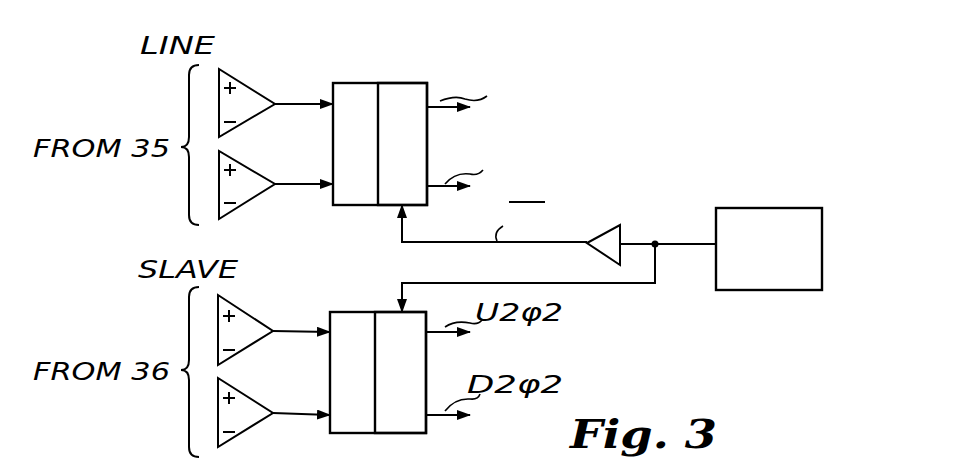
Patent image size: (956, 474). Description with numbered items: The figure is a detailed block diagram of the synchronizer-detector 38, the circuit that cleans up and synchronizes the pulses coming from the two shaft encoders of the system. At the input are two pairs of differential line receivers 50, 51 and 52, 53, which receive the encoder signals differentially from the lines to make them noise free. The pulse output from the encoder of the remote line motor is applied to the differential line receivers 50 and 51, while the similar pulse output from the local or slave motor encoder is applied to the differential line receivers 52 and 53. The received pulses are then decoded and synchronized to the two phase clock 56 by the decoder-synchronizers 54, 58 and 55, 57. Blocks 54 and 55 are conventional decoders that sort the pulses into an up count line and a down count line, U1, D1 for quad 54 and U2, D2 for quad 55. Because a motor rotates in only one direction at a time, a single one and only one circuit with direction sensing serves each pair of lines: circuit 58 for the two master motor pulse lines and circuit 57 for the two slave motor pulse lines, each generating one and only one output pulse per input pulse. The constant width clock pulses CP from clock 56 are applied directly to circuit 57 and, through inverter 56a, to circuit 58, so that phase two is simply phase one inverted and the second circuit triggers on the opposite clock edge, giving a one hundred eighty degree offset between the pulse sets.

The synchronizer-detector 38 is at (466, 68).
The differential line receiver 50 is at (259, 80).
The differential line receiver 51 is at (257, 197).
The differential line receiver 52 is at (262, 317).
The differential line receiver 53 is at (243, 430).
The decoder-synchronizer (quad) 54 is at (350, 83).
The synchronizer with direction sensing (one and only one circuit) 58 is at (409, 83).
The decoder-synchronizer (quad) 55 is at (353, 428).
The synchronizer with direction sensing (one and only one circuit) 57 is at (400, 428).
The two phase clock 56 is at (826, 256).
The inverter 56a is at (600, 253).